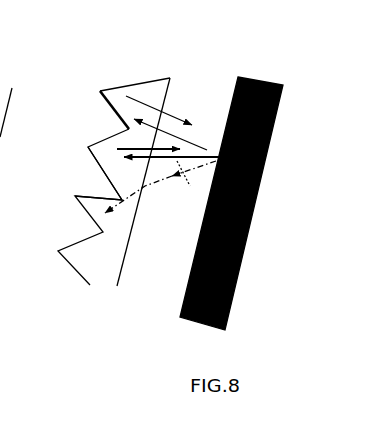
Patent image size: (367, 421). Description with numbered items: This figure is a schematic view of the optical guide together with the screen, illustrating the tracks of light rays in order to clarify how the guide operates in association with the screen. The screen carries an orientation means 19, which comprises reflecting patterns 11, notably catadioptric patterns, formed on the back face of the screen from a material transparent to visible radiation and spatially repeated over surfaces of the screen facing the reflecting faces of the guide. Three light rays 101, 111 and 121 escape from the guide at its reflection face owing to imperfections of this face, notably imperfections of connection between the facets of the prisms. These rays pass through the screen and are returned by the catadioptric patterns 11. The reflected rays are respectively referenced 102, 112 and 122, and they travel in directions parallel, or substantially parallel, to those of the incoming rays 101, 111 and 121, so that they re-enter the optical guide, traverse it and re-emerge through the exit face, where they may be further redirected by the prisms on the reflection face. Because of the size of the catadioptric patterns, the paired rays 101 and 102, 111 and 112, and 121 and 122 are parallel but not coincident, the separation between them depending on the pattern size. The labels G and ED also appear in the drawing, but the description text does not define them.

The reflecting patterns 11 is at (93, 84).
The orientation means 19 is at (135, 74).
The light ray 101 is at (205, 146).
The reflected light ray 102 is at (150, 106).
The light ray 111 is at (190, 185).
The reflected light ray 112 is at (123, 132).
The light ray 121 is at (150, 195).
The reflected light ray 122 is at (103, 184).
The glass substrate G is at (253, 224).
The electrode ED is at (82, 296).